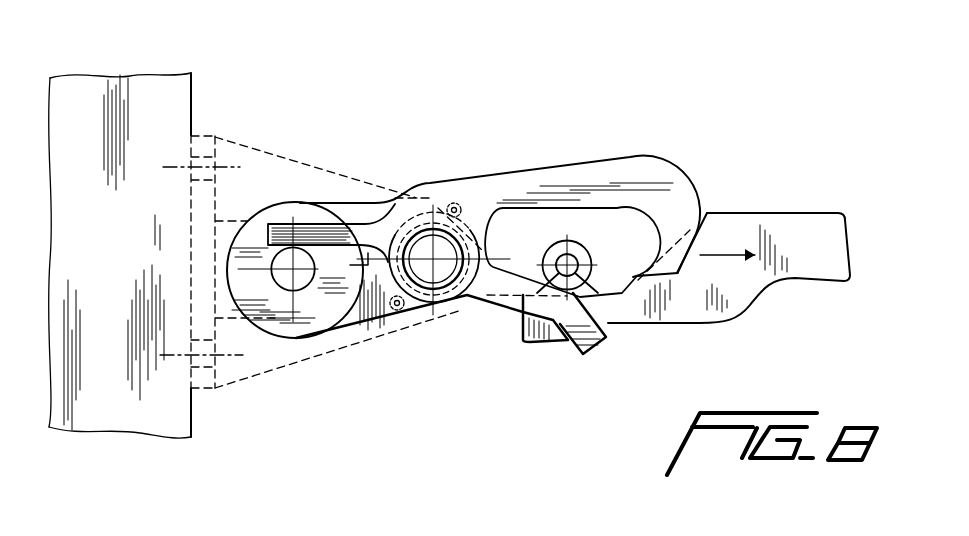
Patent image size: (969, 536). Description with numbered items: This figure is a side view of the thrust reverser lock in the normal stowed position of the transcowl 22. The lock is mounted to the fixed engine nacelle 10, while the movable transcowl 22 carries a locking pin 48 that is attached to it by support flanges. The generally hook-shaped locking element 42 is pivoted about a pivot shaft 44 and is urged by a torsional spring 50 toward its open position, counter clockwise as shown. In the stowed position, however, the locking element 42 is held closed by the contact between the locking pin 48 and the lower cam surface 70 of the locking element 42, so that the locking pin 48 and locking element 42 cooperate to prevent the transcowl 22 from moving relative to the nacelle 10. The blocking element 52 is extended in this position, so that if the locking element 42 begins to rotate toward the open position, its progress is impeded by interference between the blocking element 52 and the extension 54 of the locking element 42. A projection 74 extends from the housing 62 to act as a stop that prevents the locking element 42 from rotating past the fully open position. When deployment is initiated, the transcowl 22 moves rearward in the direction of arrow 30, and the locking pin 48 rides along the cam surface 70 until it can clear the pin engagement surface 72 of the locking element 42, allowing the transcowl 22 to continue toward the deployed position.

The engine nacelle 10 is at (124, 230).
The transcowl 22 is at (818, 208).
The rearward direction (arrow) 30 is at (727, 240).
The locking element 42 is at (481, 172).
The pivot shaft 44 is at (443, 288).
The locking pin 48 is at (573, 236).
The torsional spring 50 is at (399, 310).
The blocking element 52 is at (288, 293).
The extension 54 is at (307, 218).
The housing 62 is at (247, 138).
The cam surface 70 is at (600, 308).
The pin engagement surface 72 is at (636, 249).
The projection 74 is at (350, 257).